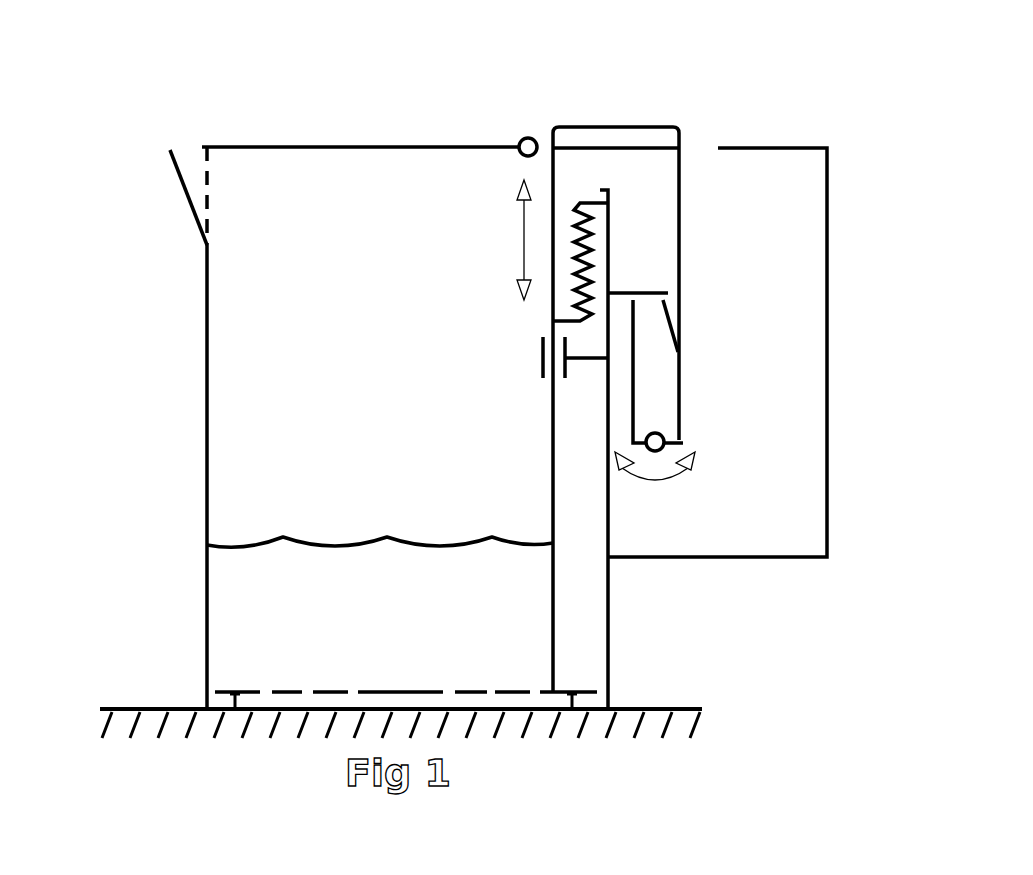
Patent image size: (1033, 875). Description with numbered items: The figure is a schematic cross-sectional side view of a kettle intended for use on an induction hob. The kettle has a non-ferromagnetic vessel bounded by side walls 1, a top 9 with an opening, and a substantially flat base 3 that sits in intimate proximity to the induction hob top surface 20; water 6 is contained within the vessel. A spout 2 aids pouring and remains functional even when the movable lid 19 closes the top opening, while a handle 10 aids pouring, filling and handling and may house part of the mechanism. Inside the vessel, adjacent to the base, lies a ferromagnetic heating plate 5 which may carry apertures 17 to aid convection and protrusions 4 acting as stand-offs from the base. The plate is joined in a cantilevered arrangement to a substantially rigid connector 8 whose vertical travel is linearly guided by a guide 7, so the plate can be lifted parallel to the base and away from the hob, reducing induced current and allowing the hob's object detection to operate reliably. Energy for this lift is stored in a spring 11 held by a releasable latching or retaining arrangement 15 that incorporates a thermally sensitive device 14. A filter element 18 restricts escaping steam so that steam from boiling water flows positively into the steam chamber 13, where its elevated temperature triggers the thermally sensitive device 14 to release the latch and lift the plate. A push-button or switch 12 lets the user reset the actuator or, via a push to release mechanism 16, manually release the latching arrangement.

The side walls 1 is at (203, 383).
The spout 2 is at (175, 197).
The base of the vessel 3 is at (503, 715).
The protrusions 4 is at (225, 712).
The ferromagnetic heating plate 5 is at (250, 688).
The water 6 is at (357, 543).
The guide 7 is at (537, 367).
The connector 8 is at (558, 585).
The top 9 is at (318, 142).
The handle 10 is at (802, 565).
The spring 11 is at (573, 303).
The push-button or switch 12 is at (616, 127).
The steam chamber 13 is at (640, 195).
The thermally sensitive device 14 is at (656, 287).
The releasable latching or retaining arrangement 15 is at (680, 308).
The push to release mechanism 16 is at (642, 383).
The apertures 17 is at (533, 690).
The filter element 18 is at (220, 192).
The movable lid 19 is at (529, 130).
The induction hob top surface 20 is at (155, 708).